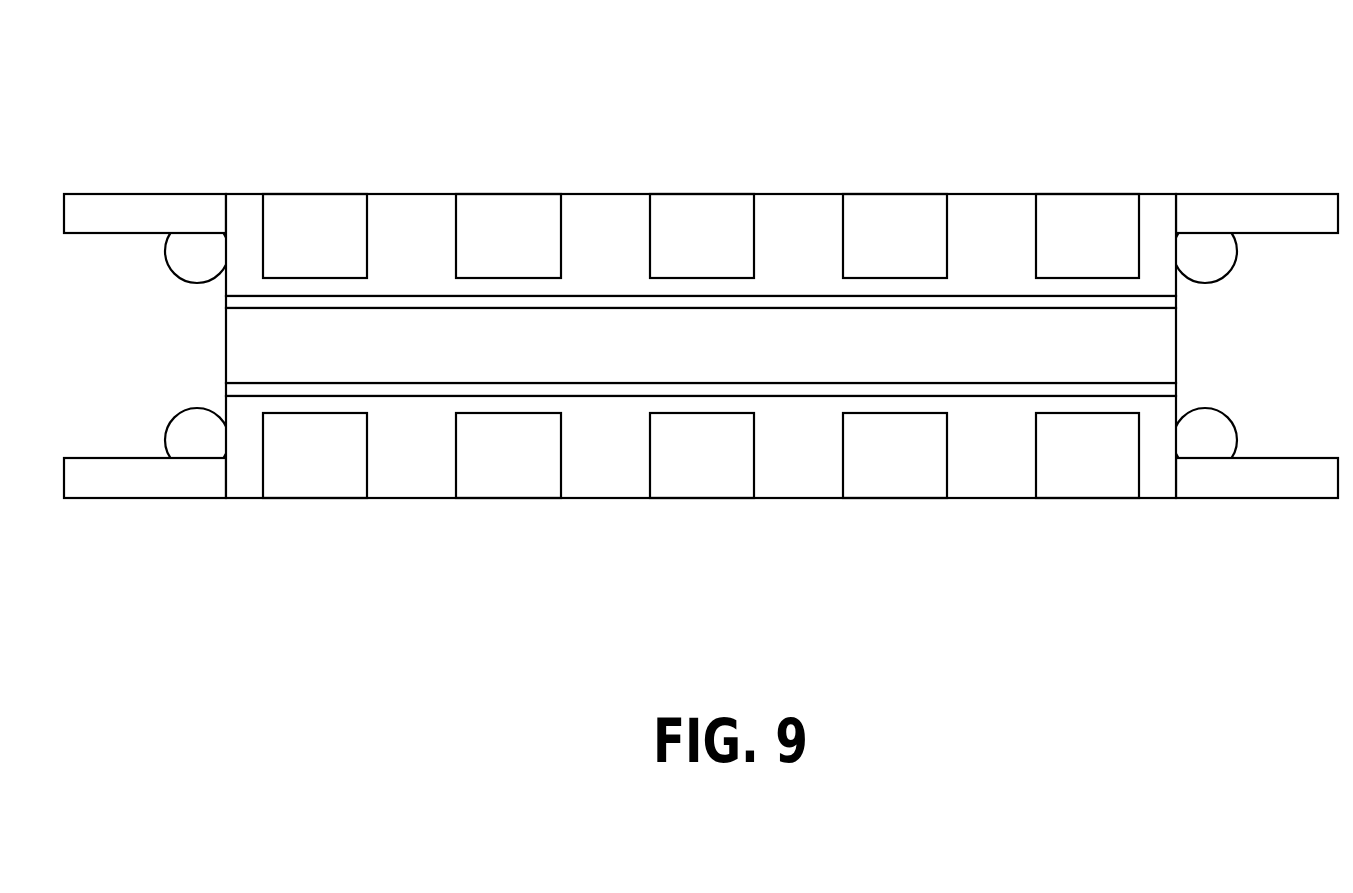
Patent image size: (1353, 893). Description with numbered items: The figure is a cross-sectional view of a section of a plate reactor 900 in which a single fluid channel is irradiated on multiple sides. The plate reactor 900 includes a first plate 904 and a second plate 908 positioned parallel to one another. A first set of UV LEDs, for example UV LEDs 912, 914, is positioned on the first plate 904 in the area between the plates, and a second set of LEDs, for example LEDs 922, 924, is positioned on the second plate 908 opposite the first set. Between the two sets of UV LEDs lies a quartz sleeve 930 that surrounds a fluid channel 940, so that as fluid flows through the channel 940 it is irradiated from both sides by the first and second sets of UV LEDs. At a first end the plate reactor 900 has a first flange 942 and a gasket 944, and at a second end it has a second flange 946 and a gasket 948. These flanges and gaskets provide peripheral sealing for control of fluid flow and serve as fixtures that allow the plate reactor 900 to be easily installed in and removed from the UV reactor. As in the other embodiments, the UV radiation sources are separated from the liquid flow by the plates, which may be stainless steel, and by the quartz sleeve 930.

The plate reactor 900 is at (701, 311).
The first plate 904 is at (610, 194).
The second plate 908 is at (997, 500).
The UV LED 912 is at (325, 222).
The UV LED 914 is at (908, 220).
The LED 922 is at (316, 485).
The LED 924 is at (907, 478).
The quartz sleeve 930 is at (387, 397).
The fluid channel 940 is at (974, 350).
The first flange 942 is at (150, 193).
The gasket 944 is at (165, 262).
The second flange 946 is at (1312, 193).
The gasket 948 is at (1223, 275).